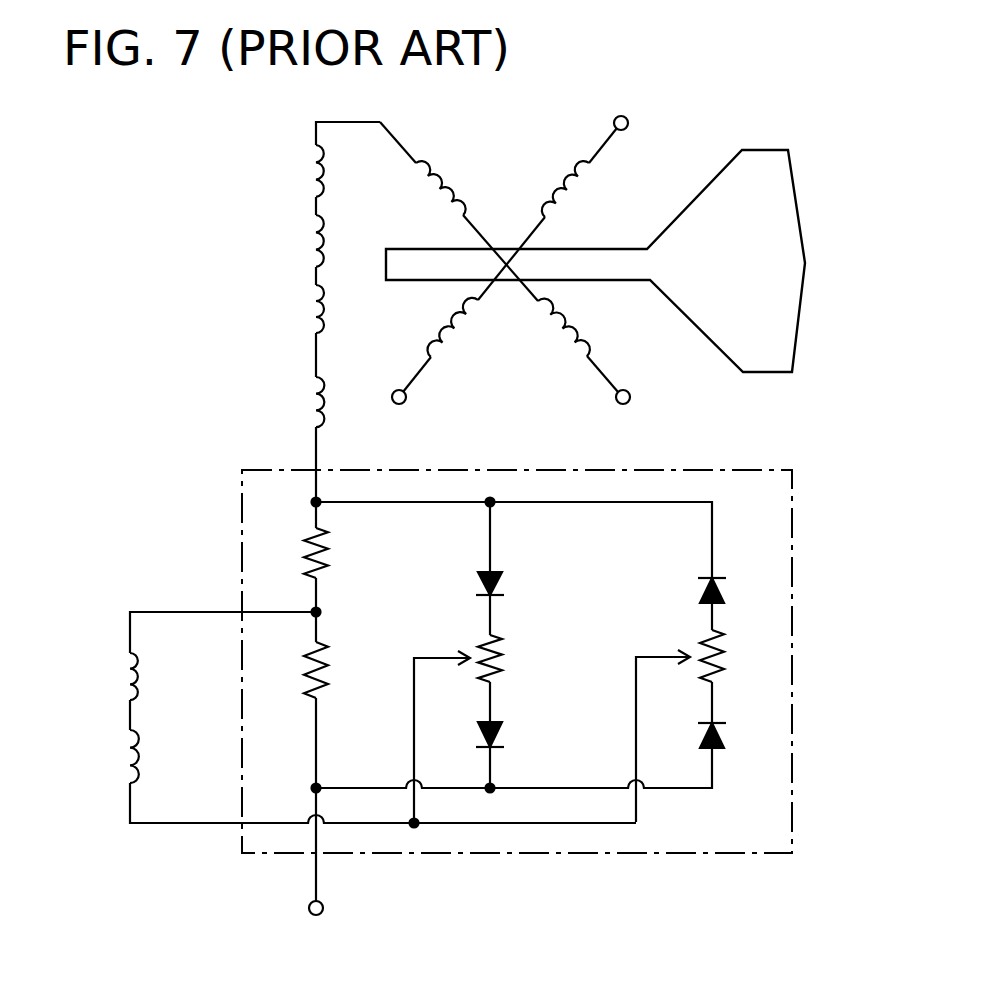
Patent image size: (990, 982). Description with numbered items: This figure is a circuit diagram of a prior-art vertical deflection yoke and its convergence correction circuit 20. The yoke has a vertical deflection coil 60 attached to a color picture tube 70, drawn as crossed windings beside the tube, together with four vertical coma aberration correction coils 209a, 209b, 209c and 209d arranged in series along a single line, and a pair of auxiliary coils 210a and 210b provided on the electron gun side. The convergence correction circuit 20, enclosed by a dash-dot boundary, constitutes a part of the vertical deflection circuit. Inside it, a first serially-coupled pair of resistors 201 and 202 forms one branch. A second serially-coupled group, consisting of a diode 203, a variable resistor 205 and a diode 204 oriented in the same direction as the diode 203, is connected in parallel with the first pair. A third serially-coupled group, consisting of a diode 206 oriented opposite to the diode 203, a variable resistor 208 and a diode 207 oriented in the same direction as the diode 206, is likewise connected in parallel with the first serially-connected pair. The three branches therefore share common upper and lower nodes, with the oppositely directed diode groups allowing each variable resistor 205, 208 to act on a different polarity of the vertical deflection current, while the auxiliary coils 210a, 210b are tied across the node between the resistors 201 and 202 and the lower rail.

The vertical coma aberration correction coil 209a is at (316, 160).
The vertical coma aberration correction coil 209b is at (316, 235).
The vertical coma aberration correction coil 209c is at (316, 305).
The vertical coma aberration correction coil 209d is at (316, 382).
The vertical deflection coil 60 is at (463, 338).
The color picture tube 70 is at (802, 218).
The convergence correction circuit 20 is at (793, 788).
The resistor 201 is at (335, 555).
The resistor 202 is at (330, 652).
The diode 203 is at (500, 596).
The diode 204 is at (500, 730).
The variable resistor 205 is at (505, 672).
The diode 206 is at (718, 576).
The diode 207 is at (715, 750).
The variable resistor 208 is at (703, 645).
The auxiliary coil 210a is at (130, 658).
The auxiliary coil 210b is at (130, 740).